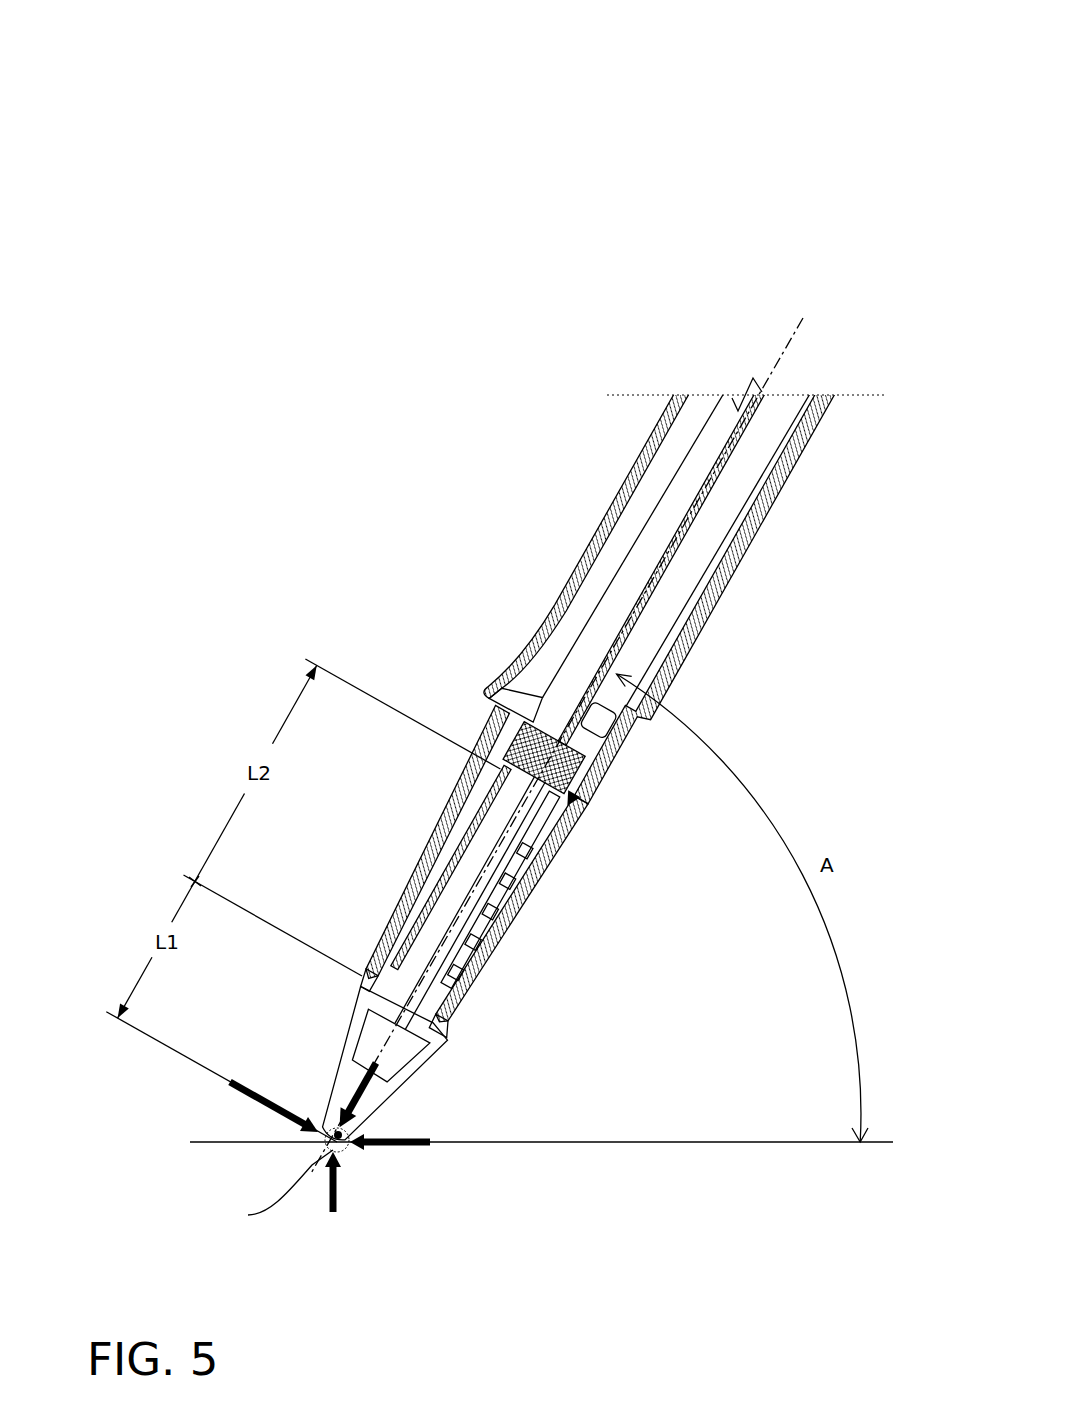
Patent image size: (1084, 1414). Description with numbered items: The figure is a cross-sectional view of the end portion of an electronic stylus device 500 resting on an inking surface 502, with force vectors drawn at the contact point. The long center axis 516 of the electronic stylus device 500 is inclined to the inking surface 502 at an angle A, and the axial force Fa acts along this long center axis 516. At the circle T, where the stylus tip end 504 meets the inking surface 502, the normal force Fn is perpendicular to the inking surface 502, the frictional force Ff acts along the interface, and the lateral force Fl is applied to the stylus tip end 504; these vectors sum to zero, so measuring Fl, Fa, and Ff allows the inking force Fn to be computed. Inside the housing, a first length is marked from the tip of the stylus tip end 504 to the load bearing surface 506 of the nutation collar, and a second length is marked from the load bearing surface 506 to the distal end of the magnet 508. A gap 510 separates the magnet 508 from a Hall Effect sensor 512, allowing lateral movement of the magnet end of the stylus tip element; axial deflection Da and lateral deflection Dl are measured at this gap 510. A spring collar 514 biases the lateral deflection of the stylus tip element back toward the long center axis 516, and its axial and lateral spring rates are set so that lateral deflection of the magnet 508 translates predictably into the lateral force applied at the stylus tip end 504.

The electronic stylus device 500 is at (182, 70).
The inking surface 502 is at (325, 1147).
The stylus tip end 504 is at (413, 1067).
The load bearing surface 506 is at (363, 988).
The magnet 508 is at (530, 807).
The gap 510 is at (572, 803).
The Hall Effect sensor 512 is at (493, 727).
The spring collar 514 is at (387, 940).
The long center axis 516 is at (794, 333).